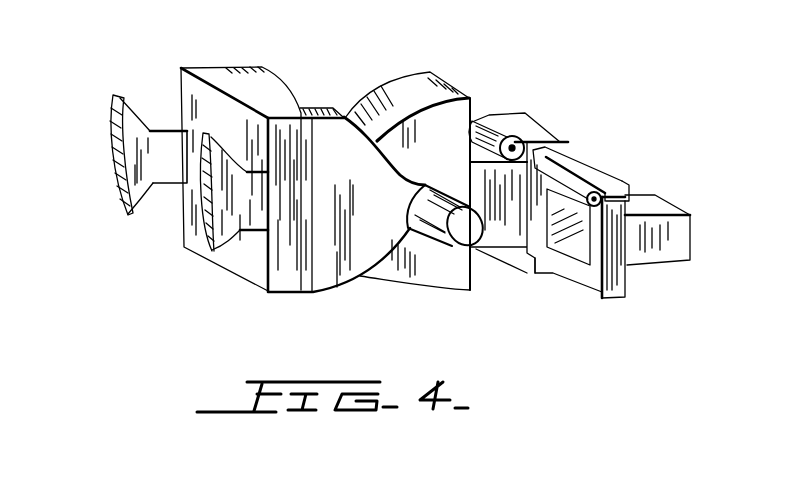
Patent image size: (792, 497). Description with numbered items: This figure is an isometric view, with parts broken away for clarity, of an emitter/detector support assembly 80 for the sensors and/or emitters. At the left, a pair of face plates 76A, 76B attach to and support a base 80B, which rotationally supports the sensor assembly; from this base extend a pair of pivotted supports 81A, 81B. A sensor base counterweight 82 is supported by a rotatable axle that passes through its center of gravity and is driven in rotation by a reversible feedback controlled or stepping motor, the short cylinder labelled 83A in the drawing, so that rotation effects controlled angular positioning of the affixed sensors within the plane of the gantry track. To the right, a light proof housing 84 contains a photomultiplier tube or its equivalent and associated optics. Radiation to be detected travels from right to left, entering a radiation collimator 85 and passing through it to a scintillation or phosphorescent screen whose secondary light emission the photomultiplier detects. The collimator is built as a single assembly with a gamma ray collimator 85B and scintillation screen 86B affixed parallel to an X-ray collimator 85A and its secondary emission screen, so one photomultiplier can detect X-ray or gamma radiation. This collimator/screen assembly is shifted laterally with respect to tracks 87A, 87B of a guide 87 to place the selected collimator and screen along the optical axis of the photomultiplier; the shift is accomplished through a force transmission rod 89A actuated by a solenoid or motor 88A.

The face plate 76A is at (137, 108).
The face plate 76B is at (238, 240).
The emitter/detector support assembly 80 is at (130, 252).
The base 80B is at (287, 296).
The pivotted support 81A is at (265, 64).
The pivotted support 81B is at (353, 285).
The sensor base counterweight 82 is at (410, 75).
The pivot pin 83A is at (463, 240).
The light proof housing 84 is at (502, 240).
The radiation collimator 85 is at (636, 178).
The X-ray collimator 85A is at (610, 171).
The gamma ray collimator 85B is at (693, 228).
The scintillation screen 86B is at (577, 247).
The guide 87 is at (533, 118).
The track 87A is at (571, 149).
The track 87B is at (541, 273).
The solenoid or motor 88A is at (489, 115).
The force transmission rod 89A is at (558, 152).